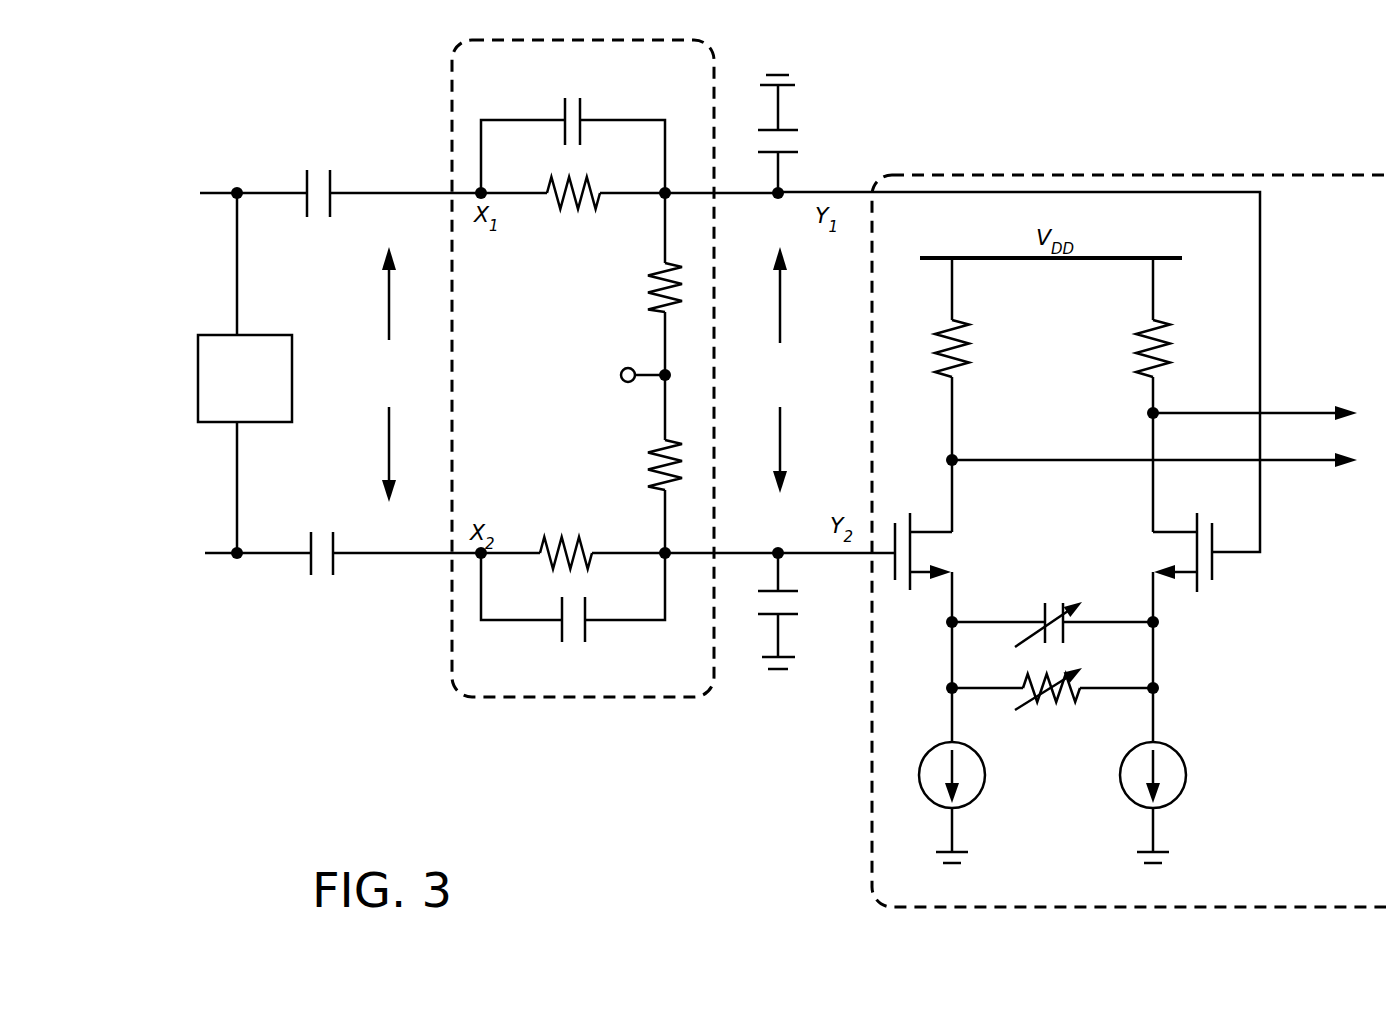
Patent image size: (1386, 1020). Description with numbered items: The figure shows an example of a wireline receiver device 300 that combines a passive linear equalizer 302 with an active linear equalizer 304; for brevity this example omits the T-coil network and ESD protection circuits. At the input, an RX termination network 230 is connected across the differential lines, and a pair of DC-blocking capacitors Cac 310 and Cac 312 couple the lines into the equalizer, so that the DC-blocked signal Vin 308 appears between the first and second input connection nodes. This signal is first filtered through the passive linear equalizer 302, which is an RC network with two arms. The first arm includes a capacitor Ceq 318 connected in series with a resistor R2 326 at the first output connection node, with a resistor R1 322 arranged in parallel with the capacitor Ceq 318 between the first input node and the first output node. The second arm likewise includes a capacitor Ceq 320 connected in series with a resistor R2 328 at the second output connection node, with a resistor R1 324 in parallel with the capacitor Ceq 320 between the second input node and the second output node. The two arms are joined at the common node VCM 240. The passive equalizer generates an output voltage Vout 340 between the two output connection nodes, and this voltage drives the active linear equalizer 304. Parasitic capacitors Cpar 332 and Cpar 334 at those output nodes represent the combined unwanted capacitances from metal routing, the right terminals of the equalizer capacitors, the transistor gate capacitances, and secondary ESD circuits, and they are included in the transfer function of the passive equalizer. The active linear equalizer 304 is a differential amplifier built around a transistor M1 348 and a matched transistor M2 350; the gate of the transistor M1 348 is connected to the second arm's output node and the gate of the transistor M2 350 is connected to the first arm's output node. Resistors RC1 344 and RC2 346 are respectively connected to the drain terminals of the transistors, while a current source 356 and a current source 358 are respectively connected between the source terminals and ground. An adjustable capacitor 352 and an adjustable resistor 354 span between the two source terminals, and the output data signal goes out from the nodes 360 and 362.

The wireline receiver device 300 is at (207, 63).
The RX termination network 230 is at (198, 380).
The capacitor Cac 310 is at (316, 199).
The capacitor Cac 312 is at (321, 557).
The DC-blocked signal Vin 308 is at (411, 376).
The passive linear equalizer 302 is at (557, 386).
The capacitor Ceq 318 is at (573, 130).
The capacitor Ceq 320 is at (573, 617).
The resistor R1 322 is at (595, 213).
The resistor R1 324 is at (585, 535).
The resistor R2 326 is at (642, 284).
The resistor R2 328 is at (642, 464).
The common node VCM 240 is at (623, 388).
The parasitic capacitor Cpar 332 is at (806, 134).
The parasitic capacitor Cpar 334 is at (805, 611).
The output voltage Vout 340 is at (808, 370).
The active linear equalizer 304 is at (1129, 521).
The resistor RC1 344 is at (976, 359).
The resistor RC2 346 is at (1175, 335).
The transistor M1 348 is at (948, 627).
The transistor M2 350 is at (1161, 627).
The adjustable capacitor 352 is at (1052, 597).
The adjustable resistor 354 is at (1052, 713).
The current source 356 is at (986, 775).
The current source 358 is at (1187, 775).
The output node 360 is at (1133, 480).
The output node 362 is at (1227, 469).